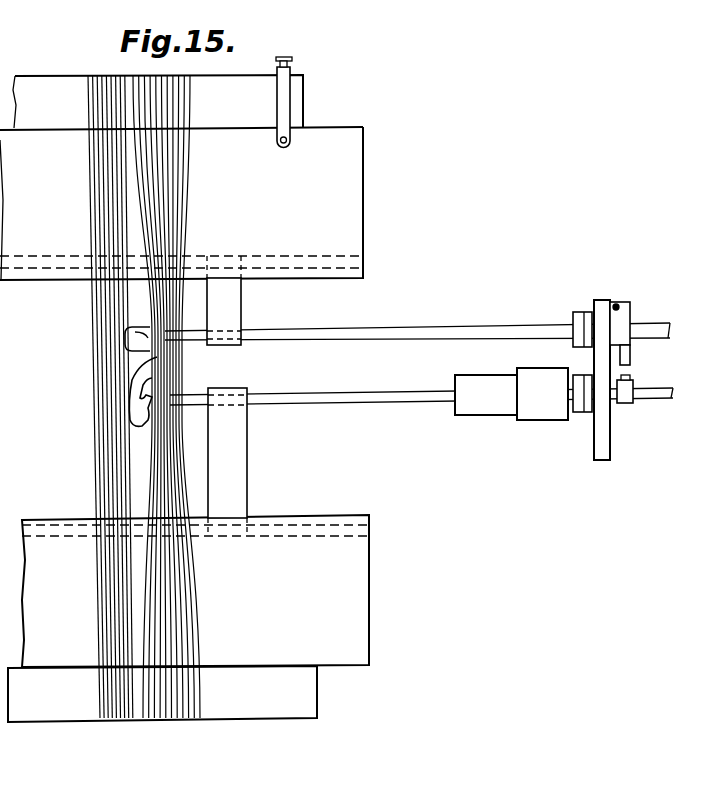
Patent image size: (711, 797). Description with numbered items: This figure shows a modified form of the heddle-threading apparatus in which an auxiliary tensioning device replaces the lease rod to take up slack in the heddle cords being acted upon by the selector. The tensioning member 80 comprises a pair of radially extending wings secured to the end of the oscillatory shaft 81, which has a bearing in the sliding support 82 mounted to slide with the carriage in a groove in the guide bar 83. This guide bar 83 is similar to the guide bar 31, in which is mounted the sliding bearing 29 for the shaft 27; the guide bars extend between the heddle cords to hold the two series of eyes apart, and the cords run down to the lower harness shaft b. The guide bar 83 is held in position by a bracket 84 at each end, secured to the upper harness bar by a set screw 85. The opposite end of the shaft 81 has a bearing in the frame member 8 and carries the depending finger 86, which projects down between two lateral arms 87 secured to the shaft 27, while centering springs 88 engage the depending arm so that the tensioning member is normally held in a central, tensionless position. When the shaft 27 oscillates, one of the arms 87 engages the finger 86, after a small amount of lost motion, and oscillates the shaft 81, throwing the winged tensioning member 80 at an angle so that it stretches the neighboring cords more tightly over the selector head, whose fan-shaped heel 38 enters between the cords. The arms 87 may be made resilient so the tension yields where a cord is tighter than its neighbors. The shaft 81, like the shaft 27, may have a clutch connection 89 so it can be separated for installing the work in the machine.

The sliding frame 8 is at (600, 438).
The rock shaft 27 is at (375, 400).
The sliding bearing 29 is at (244, 482).
The guide bar 31 is at (357, 587).
The fan-shaped heel 38 is at (147, 368).
The tensioning member 80 is at (125, 331).
The oscillatory shaft 81 is at (352, 333).
The sliding support 82 is at (236, 310).
The guide bar 83 is at (353, 217).
The bracket 84 is at (283, 101).
The set screw 85 is at (289, 62).
The depending finger 86 is at (633, 352).
The lateral arms 87 is at (635, 382).
The centering springs 88 is at (633, 313).
The clutch connection 89 is at (573, 315).
The shaft b is at (315, 706).